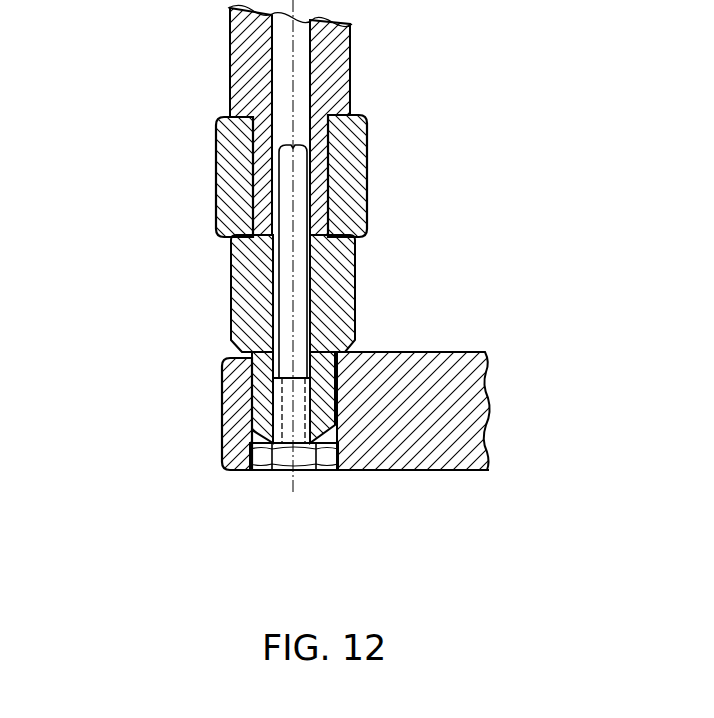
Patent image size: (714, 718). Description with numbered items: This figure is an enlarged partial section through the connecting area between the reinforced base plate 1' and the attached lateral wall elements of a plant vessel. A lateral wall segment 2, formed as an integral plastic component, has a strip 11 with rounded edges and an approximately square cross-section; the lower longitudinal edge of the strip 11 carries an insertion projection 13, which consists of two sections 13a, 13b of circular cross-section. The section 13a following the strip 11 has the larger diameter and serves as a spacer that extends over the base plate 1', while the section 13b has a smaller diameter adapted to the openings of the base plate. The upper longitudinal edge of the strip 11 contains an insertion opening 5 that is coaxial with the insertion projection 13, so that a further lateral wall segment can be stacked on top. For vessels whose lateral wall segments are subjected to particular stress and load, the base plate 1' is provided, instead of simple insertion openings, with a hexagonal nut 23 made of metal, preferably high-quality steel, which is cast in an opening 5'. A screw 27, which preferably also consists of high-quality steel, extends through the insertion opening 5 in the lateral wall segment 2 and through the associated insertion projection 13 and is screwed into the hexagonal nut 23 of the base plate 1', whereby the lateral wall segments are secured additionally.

The base plate 1' is at (457, 411).
The lateral wall segment 2 is at (370, 280).
The insertion opening 5 is at (189, 177).
The opening 5' is at (199, 428).
The strip 11 is at (358, 217).
The insertion projection 13 is at (277, 224).
The section 13a is at (333, 73).
The section 13b is at (262, 181).
The hexagonal nut 23 is at (338, 472).
The screw 27 is at (300, 178).